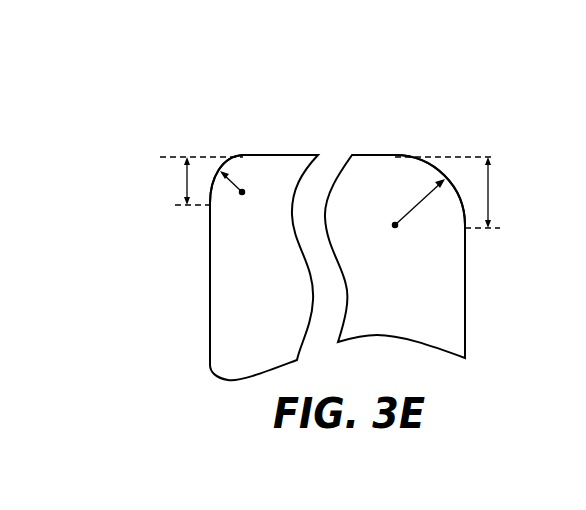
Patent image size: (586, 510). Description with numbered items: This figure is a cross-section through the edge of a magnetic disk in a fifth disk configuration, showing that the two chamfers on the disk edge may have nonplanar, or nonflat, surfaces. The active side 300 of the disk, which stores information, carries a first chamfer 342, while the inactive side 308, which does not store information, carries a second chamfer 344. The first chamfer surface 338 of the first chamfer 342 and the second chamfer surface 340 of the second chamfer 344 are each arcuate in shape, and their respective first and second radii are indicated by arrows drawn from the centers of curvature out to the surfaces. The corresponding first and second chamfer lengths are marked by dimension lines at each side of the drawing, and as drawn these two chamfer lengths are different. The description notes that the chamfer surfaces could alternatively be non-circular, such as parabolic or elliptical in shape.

The active side 300 is at (210, 300).
The inactive side 308 is at (466, 295).
The first chamfer surface 338 is at (221, 170).
The second chamfer surface 340 is at (434, 170).
The first chamfer 342 is at (196, 130).
The second chamfer 344 is at (494, 126).